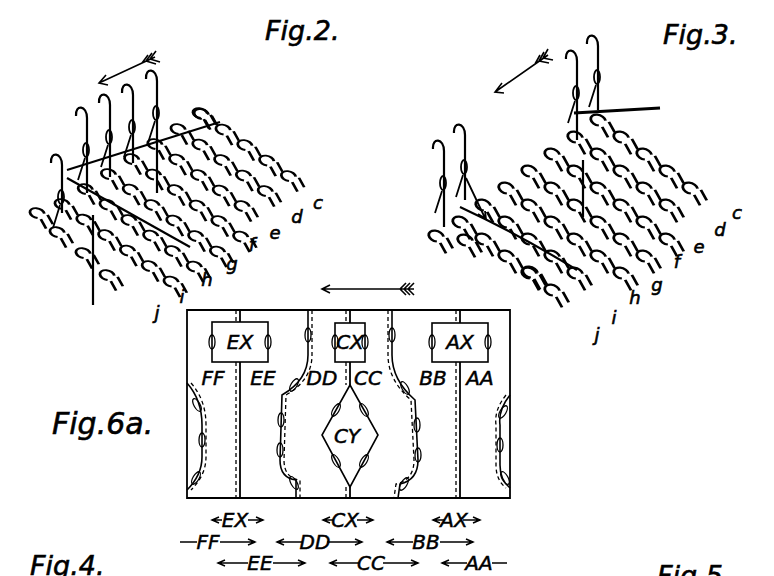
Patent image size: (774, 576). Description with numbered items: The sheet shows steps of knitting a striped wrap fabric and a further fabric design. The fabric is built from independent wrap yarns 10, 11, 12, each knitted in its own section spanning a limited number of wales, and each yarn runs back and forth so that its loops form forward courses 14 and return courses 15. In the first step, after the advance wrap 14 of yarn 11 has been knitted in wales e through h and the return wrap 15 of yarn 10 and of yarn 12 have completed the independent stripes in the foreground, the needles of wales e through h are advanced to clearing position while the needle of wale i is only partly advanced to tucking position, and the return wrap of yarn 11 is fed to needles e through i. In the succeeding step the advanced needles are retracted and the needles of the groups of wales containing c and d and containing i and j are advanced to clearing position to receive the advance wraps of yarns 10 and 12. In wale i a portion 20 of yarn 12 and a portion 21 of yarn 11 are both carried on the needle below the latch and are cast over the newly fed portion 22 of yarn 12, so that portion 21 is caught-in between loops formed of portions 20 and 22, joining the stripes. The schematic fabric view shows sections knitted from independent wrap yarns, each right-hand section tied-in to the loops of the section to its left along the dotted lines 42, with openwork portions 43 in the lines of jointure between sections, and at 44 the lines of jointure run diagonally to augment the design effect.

In FIG. 2, the wrap yarn 10 is at (296, 172).
In FIG. 3, the wrap yarn 10 is at (650, 108).
In FIG. 2, the wrap yarn 11 is at (174, 116).
In FIG. 3, the wrap yarn 11 is at (676, 210).
In FIG. 2, the wrap yarn 12 is at (84, 293).
In FIG. 3, the wrap yarn 12 is at (548, 279).
In FIG. 2, the forward course 14 is at (200, 117).
In FIG. 3, the forward course 14 is at (609, 85).
In FIG. 2, the return course 15 is at (190, 132).
In FIG. 3, the portion of yarn 12 20 is at (434, 233).
In FIG. 3, the portion of yarn 11 21 is at (462, 241).
In FIG. 3, the newly fed portion of yarn 12 22 is at (466, 178).
In FIG. 6A, the dotted lines 42 is at (213, 355).
In FIG. 6A, the openwork portions 43 is at (213, 340).
In FIG. 6A, the diagonal lines of jointure 44 is at (366, 412).